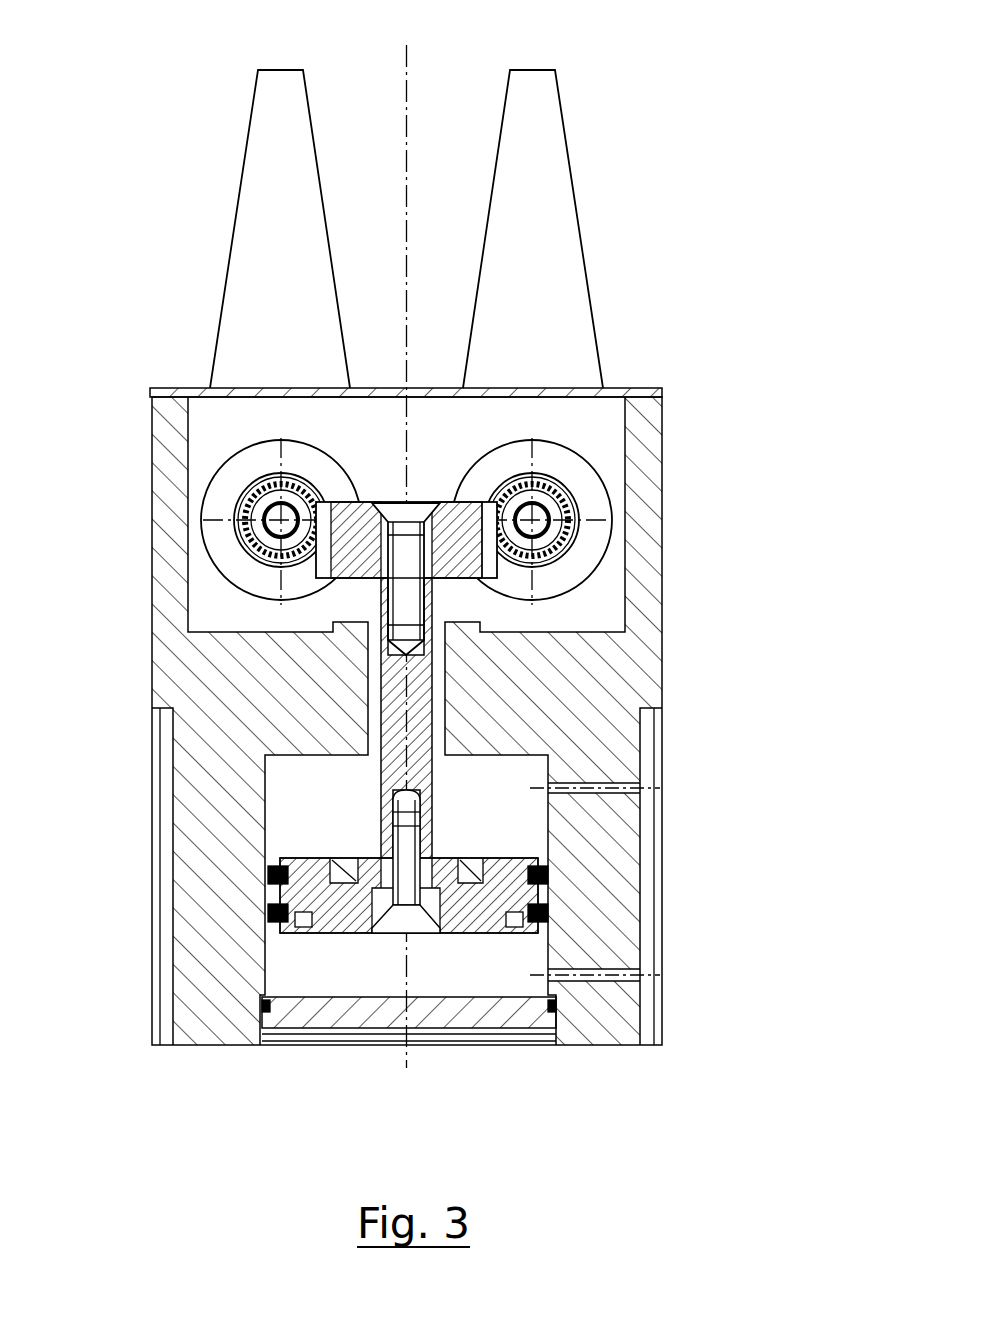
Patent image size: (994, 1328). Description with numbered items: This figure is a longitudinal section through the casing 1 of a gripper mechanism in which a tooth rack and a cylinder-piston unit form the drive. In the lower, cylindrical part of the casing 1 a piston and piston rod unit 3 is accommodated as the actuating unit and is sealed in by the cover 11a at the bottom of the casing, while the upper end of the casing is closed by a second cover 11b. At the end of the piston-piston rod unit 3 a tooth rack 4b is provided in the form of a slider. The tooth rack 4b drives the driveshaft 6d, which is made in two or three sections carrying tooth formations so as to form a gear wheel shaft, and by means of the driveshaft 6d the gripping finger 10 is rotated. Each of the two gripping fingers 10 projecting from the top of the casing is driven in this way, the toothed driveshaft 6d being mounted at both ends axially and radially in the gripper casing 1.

The casing 1 is at (490, 721).
The piston and piston rod unit 3 is at (550, 768).
The tooth rack 4b is at (572, 579).
The driveshaft 6d is at (503, 482).
The gripping finger 10 is at (490, 221).
The cover 11a is at (374, 1084).
The top cover plate 11b is at (369, 346).